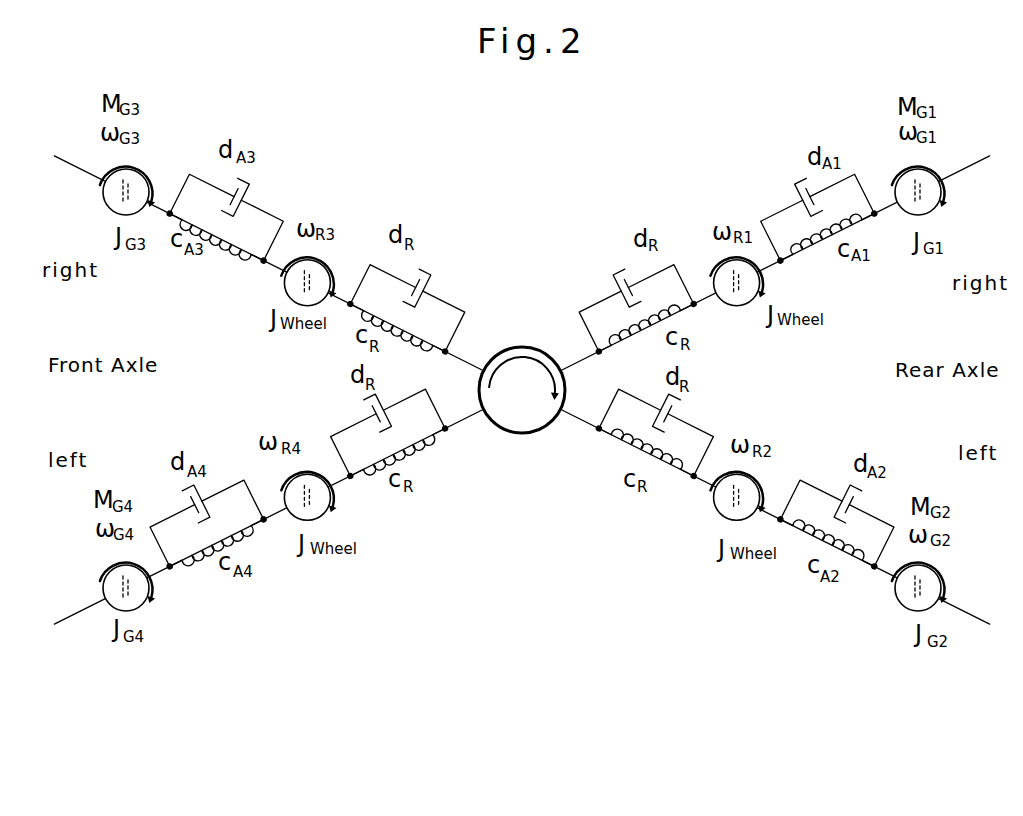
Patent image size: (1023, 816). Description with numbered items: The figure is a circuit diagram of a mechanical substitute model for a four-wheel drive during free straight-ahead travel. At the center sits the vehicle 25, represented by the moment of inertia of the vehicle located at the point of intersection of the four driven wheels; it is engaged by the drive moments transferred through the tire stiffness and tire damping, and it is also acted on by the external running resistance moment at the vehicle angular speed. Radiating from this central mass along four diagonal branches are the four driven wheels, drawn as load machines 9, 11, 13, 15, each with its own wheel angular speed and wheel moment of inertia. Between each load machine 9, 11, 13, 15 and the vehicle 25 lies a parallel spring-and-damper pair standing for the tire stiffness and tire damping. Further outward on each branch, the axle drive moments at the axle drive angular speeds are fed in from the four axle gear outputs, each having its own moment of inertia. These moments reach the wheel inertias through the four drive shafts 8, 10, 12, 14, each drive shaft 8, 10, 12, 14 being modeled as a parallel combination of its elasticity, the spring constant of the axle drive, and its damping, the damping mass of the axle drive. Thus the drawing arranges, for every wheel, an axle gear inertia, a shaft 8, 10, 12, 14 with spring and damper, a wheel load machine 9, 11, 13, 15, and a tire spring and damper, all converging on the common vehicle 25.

The drive shaft 8 is at (878, 149).
The load machine 9 is at (690, 233).
The drive shaft 10 is at (875, 612).
The load machine 11 is at (744, 424).
The drive shaft 12 is at (193, 151).
The load machine 13 is at (375, 233).
The drive shaft 14 is at (202, 604).
The load machine 15 is at (334, 418).
The vehicle 25 is at (521, 347).